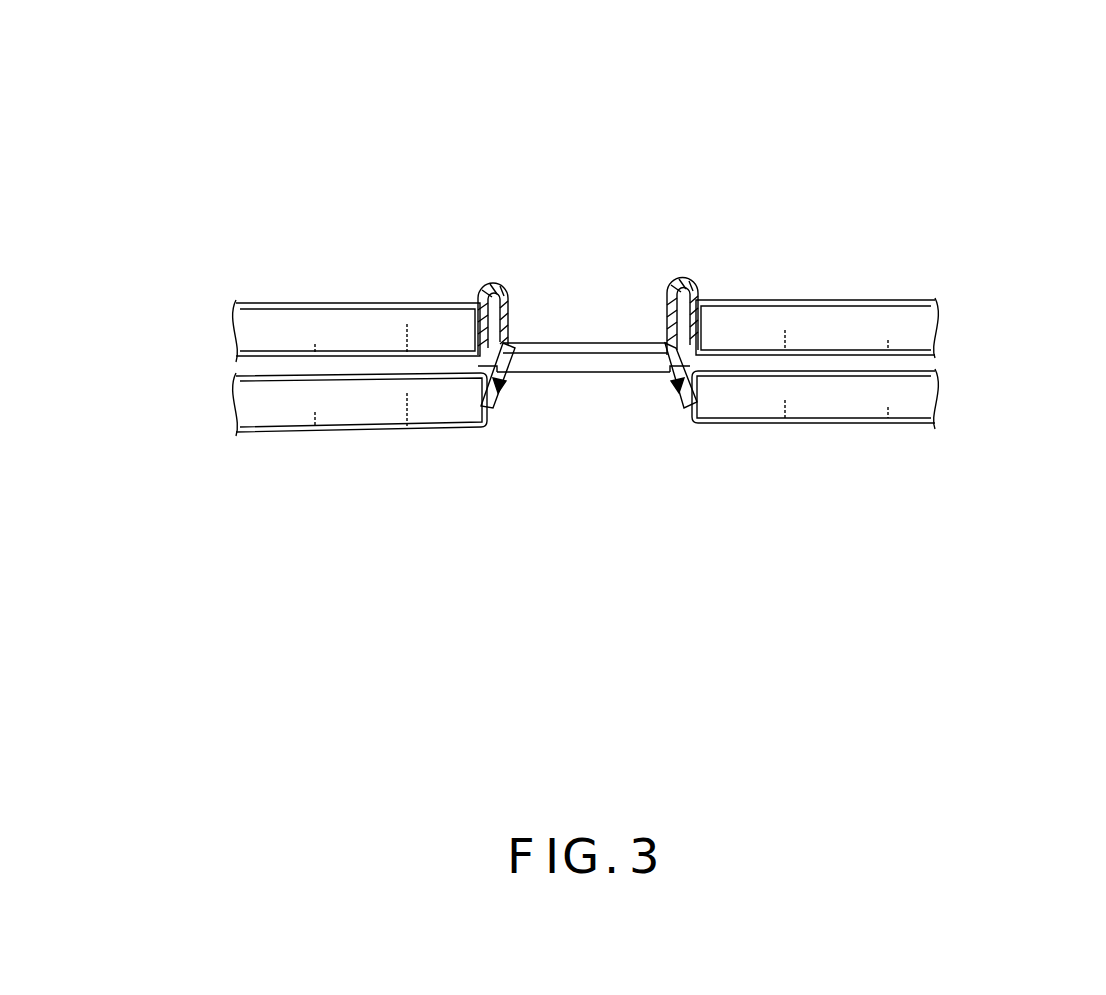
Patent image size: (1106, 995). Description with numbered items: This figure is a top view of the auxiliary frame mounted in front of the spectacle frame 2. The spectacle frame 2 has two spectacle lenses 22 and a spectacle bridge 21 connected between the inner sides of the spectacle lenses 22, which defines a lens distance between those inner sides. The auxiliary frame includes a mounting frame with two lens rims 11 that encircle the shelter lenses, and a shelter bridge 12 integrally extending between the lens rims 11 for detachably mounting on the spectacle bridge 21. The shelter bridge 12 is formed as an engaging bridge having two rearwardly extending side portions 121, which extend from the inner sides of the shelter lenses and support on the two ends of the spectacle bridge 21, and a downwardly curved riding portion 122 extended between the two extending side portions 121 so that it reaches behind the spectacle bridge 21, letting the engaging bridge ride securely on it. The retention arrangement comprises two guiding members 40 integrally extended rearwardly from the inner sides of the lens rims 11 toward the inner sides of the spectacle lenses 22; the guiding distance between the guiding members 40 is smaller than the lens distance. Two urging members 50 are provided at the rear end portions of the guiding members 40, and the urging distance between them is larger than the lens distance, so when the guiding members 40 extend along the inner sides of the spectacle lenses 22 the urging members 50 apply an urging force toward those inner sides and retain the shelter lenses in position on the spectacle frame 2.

The spectacle frame 2 is at (935, 178).
The lens rims 11 is at (353, 410).
The spectacle lenses 22 is at (293, 322).
The shelter bridge 12 is at (652, 273).
The extending side portions 121 is at (598, 347).
The riding portion 122 is at (505, 393).
The spectacle bridge 21 is at (555, 365).
The guiding members 40 is at (508, 326).
The urging members 50 is at (492, 332).